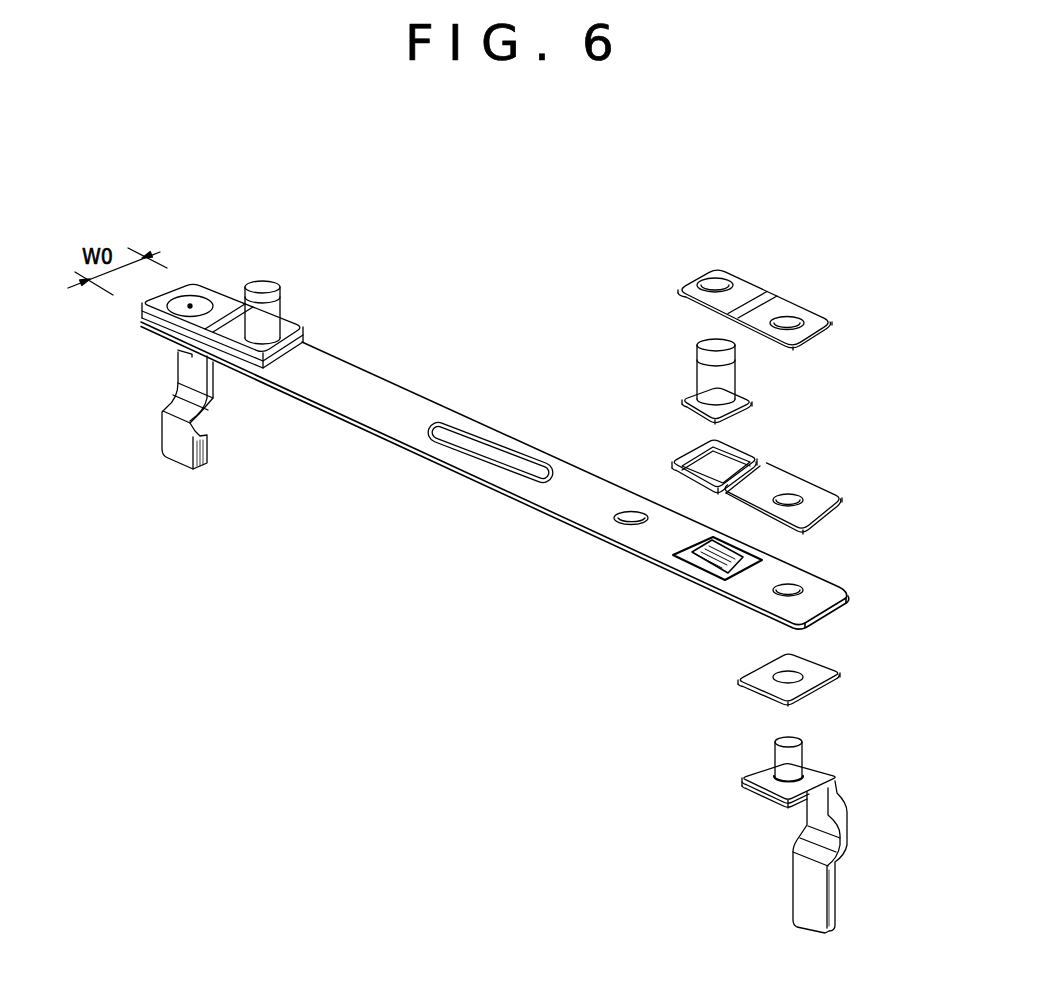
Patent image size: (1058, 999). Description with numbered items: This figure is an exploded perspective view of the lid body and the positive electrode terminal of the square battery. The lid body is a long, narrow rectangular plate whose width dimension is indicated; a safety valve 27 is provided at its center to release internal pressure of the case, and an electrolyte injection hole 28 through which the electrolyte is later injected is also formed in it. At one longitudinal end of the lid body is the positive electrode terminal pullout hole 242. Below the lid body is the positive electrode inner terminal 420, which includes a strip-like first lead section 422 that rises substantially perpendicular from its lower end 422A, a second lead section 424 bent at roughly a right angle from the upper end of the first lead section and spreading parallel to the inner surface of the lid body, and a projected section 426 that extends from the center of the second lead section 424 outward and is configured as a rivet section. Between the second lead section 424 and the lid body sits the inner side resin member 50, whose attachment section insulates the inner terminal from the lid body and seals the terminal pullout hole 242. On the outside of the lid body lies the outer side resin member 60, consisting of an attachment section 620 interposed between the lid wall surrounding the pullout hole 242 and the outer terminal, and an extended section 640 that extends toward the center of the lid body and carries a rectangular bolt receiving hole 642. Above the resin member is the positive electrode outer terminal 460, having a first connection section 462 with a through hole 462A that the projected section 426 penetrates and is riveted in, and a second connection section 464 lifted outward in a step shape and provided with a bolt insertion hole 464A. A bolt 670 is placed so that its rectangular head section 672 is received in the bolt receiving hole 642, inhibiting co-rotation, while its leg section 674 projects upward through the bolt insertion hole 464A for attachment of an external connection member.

The safety valve 27 is at (480, 452).
The electrolyte injection hole 28 is at (627, 518).
The positive electrode terminal pullout hole 242 is at (801, 587).
The outer side resin member 60 is at (752, 472).
The extended section 640 is at (708, 452).
The bolt receiving hole 642 is at (702, 463).
The attachment section 620 is at (846, 505).
The bolt 670 is at (731, 364).
The head section 672 is at (688, 392).
The leg section 674 is at (700, 345).
The positive electrode outer terminal 460 is at (779, 282).
The first connection section 462 is at (839, 302).
The through hole 462A is at (787, 317).
The second connection section 464 is at (714, 241).
The bolt insertion hole 464A is at (712, 281).
The inner side resin member 50 is at (732, 698).
The positive electrode inner terminal 420 is at (805, 830).
The first lead section 422 is at (864, 857).
The lower end 422A is at (829, 897).
The second lead section 424 is at (768, 794).
The projected section 426 is at (804, 750).